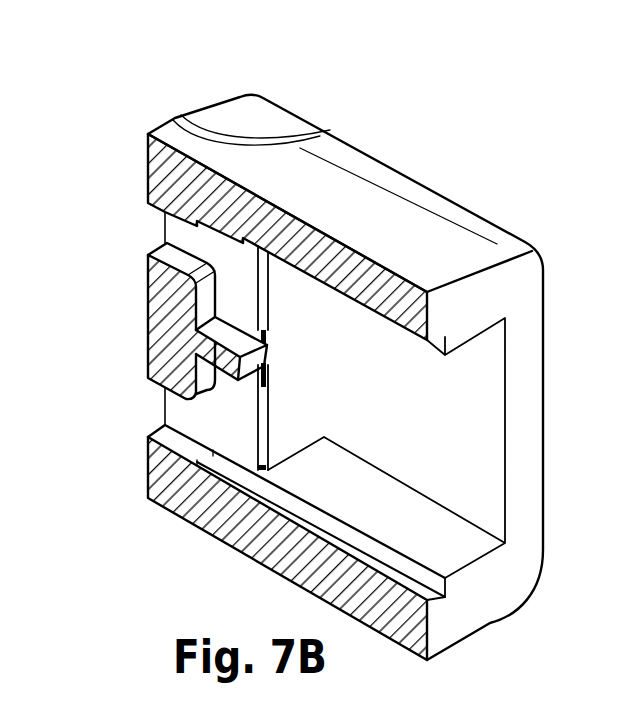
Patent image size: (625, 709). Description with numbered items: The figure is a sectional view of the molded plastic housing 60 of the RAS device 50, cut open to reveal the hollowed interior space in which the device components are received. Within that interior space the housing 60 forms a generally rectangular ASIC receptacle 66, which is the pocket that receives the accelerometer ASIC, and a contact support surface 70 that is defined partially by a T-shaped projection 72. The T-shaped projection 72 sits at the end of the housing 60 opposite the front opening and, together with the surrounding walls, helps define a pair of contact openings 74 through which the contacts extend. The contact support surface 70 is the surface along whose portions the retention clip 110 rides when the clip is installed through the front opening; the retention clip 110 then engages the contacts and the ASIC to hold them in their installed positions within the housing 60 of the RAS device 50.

The RAS device 50 is at (112, 119).
The housing 60 is at (378, 198).
The ASIC receptacle 66 is at (357, 421).
The contact support surface 70 is at (229, 258).
The T-shaped projection 72 is at (175, 315).
The contact openings 74 is at (133, 227).
The retention clip 110 is at (353, 532).